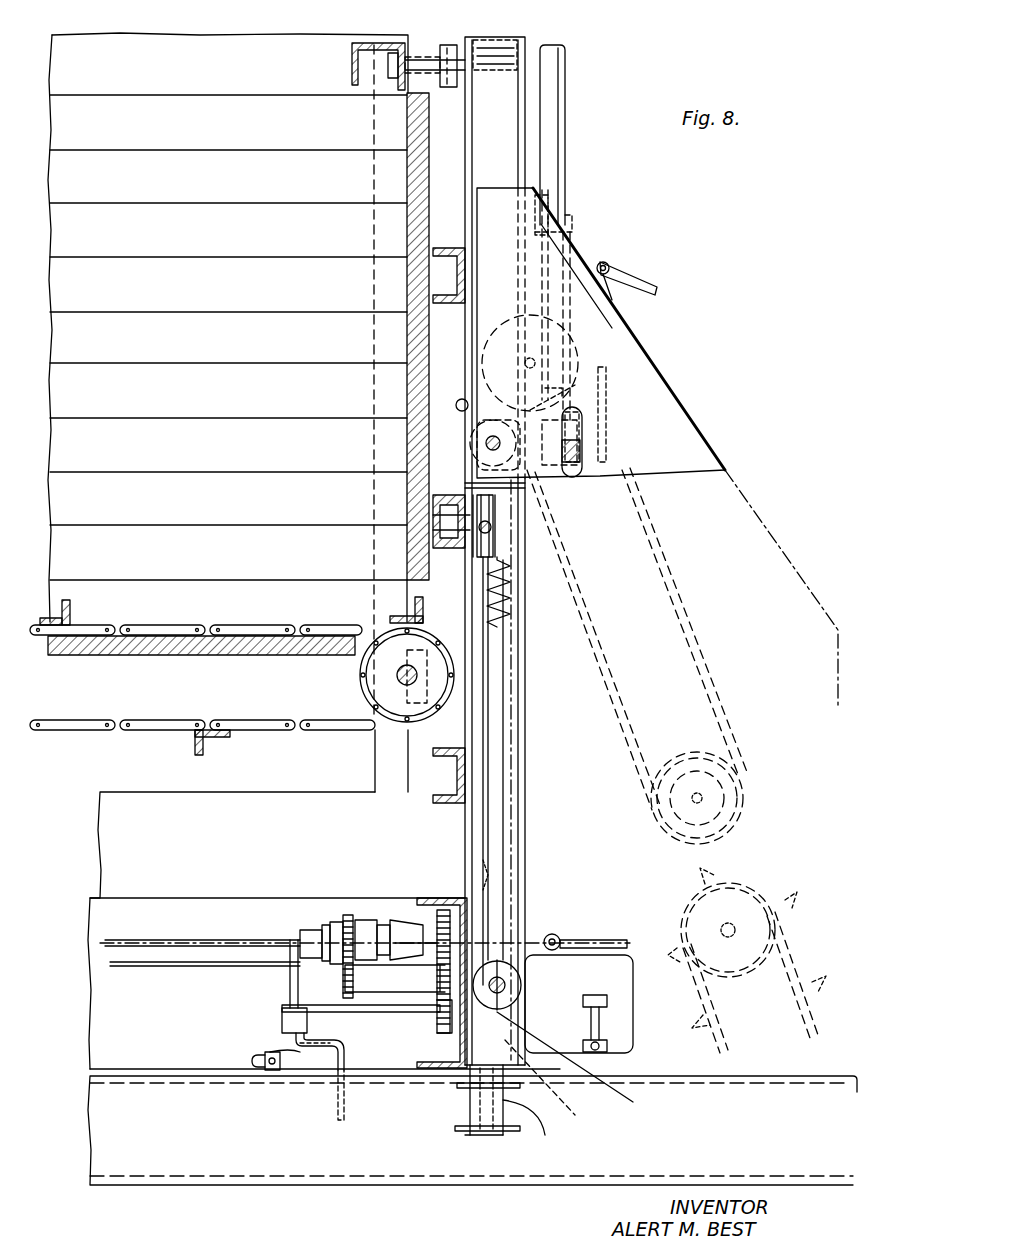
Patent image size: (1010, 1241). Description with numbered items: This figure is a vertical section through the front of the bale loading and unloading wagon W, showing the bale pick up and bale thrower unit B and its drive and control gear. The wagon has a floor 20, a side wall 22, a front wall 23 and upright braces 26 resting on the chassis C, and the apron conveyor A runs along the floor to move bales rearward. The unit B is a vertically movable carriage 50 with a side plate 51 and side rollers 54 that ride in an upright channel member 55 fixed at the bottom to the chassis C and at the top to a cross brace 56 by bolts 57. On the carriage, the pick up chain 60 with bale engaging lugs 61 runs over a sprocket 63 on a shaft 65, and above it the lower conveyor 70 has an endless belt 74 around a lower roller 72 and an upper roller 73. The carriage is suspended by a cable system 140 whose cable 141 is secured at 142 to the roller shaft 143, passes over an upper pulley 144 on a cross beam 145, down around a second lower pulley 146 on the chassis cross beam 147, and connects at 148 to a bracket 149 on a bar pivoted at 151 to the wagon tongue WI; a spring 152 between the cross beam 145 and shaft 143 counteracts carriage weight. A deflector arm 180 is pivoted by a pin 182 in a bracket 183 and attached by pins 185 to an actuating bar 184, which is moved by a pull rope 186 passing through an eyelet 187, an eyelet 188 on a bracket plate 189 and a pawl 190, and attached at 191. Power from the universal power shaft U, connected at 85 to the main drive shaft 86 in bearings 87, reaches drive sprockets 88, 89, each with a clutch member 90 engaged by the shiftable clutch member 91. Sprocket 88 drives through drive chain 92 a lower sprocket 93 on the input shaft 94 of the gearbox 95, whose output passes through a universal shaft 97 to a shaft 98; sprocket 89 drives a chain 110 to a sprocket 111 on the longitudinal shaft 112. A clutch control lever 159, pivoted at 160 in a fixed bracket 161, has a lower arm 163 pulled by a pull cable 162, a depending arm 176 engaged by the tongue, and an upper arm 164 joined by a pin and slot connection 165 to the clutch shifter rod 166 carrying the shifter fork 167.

The side wall 22 is at (254, 77).
The bale loading and unloading wagon W is at (204, 183).
The front wall 23 is at (437, 378).
The cross brace 56 is at (352, 62).
The bolts 57 is at (448, 45).
The upright channel member 55 is at (525, 798).
The deflector arm 180 is at (557, 80).
The bale pick up and bale thrower unit B is at (738, 446).
The carriage 50 is at (738, 466).
The bracket 183 is at (583, 232).
The pin 182 is at (565, 213).
The eyelet 187 is at (608, 263).
The pull rope 186 is at (650, 285).
The upper roller 73 is at (555, 325).
The rope attachment point 191 is at (563, 360).
The eyelet 188 is at (610, 372).
The bracket plate 189 is at (620, 410).
The pawl 190 is at (588, 420).
The side plate 51 is at (668, 433).
The actuating bar 184 is at (575, 470).
The pins 185 is at (582, 450).
The side roller 54 is at (512, 480).
The upper pulley 144 is at (495, 510).
The cross beam 145 is at (433, 500).
The spring 152 is at (510, 600).
The cable system 140 is at (503, 737).
The cable 141 is at (490, 762).
The lower roller 72 is at (712, 752).
The lower conveyor 70 is at (668, 580).
The endless belt 74 is at (700, 662).
The shaft 65 is at (733, 926).
The bale engaging lugs 61 is at (820, 983).
The sprocket 63 is at (738, 982).
The chain 60 is at (815, 1015).
The apron conveyor A is at (178, 613).
The floor 20 is at (190, 656).
The upright braces 26 is at (375, 758).
The chassis C is at (84, 1017).
The wagon tongue WI is at (270, 1192).
The upper arm 164 is at (300, 936).
The clutch shifter rod 166 is at (160, 942).
The longitudinal shaft 112 is at (160, 966).
The chain 110 is at (305, 958).
The pin and slot connection 165 is at (322, 935).
The bearing 87 is at (336, 922).
The drive sprocket 89 is at (346, 915).
The clutch member 90 is at (372, 920).
The main drive shaft 86 is at (368, 920).
The shiftable clutch member 91 is at (384, 925).
The clutch shifter fork 167 is at (410, 920).
The drive sprocket 88 is at (443, 910).
The drive chain 92 is at (430, 975).
The sprocket 111 is at (352, 1012).
The input shaft 94 is at (440, 1010).
The clutch control lever 159 is at (280, 1006).
The pivot 160 is at (282, 1031).
The fixed bracket 161 is at (346, 1047).
The depending arm 176 is at (341, 1125).
The pull cable 162 is at (290, 1070).
The lower arm 163 is at (325, 1045).
The gearbox 95 is at (630, 955).
The universal power shaft U is at (635, 917).
The universal connection 85 is at (560, 937).
The cable attachment 142 is at (502, 940).
The shaft 143 is at (515, 1002).
The shaft 98 is at (607, 1000).
The universal shaft 97 is at (607, 1045).
The second lower pulley 146 is at (586, 1062).
The cable connection 148 is at (559, 1082).
The cross beam 147 is at (470, 1085).
The lower sprocket 93 is at (445, 1088).
The bracket 149 is at (539, 1126).
The pivot connection 151 is at (490, 1140).